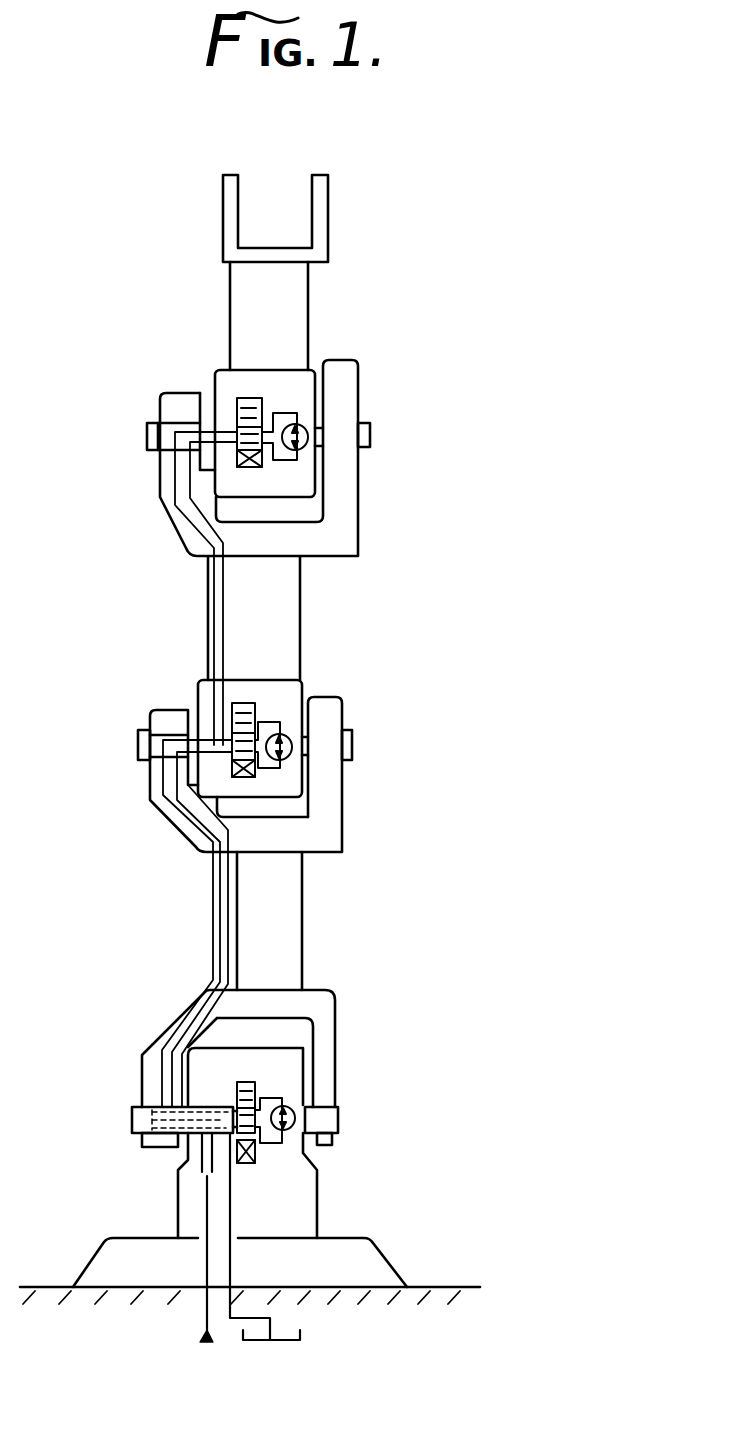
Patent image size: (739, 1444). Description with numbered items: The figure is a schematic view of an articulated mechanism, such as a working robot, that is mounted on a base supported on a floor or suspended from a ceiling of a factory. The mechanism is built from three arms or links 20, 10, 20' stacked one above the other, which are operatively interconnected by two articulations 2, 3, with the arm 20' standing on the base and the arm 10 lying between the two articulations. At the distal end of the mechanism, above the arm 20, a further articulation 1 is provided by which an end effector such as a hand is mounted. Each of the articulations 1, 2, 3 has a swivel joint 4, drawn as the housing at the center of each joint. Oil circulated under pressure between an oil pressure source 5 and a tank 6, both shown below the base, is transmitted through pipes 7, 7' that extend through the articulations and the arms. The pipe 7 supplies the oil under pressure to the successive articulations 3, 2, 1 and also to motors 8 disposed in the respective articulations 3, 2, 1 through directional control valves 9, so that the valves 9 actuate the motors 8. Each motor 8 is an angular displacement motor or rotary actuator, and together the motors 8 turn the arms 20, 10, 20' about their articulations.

The articulation 1 is at (377, 407).
The articulation 2 is at (355, 716).
The articulation 3 is at (346, 1042).
The swivel joint 4 is at (214, 386).
The oil pressure source 5 is at (203, 1336).
The tank 6 is at (307, 1332).
The pipe 7 is at (182, 769).
The pipe 7' is at (181, 774).
The motor 8 is at (300, 455).
The directional control valve 9 is at (247, 467).
The arm 10 is at (302, 916).
The arm 20 is at (314, 618).
The arm 20' is at (297, 1185).